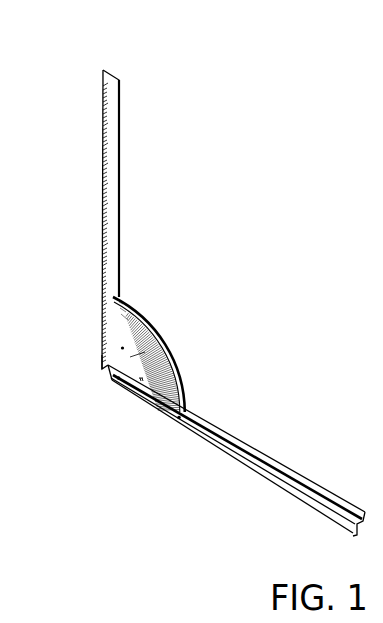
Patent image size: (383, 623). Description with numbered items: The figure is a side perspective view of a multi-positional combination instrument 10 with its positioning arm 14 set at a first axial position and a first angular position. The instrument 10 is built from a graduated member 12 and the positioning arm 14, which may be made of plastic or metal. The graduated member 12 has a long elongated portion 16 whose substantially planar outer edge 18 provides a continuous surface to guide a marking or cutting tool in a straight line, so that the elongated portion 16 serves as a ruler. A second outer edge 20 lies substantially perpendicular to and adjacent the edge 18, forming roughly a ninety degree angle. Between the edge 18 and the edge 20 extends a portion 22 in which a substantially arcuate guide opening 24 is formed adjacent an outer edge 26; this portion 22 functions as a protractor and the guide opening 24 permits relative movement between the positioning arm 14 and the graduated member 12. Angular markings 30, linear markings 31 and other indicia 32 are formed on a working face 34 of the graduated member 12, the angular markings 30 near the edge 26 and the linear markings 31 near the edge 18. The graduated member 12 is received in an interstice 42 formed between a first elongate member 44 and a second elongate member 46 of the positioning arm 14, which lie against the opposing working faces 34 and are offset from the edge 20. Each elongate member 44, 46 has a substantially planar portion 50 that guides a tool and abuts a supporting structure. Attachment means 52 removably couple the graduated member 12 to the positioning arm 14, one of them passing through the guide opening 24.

The multi-positional combination instrument 10 is at (64, 50).
The graduated member 12 is at (96, 93).
The positioning arm 14 is at (317, 473).
The elongated portion 16 is at (121, 142).
The outer edge 18 is at (102, 214).
The second outer edge 20 is at (103, 387).
The portion 22 is at (152, 302).
The guide opening 24 is at (166, 330).
The outer edge 26 is at (181, 358).
The angular markings 30 is at (123, 344).
The linear markings 31 is at (102, 238).
The indicia 32 is at (146, 392).
The working face 34 is at (102, 265).
The interstice 42 is at (215, 432).
The first elongate member 44 is at (250, 474).
The second elongate member 46 is at (252, 440).
The planar portion 50 is at (278, 463).
The attachment means 52 is at (119, 382).